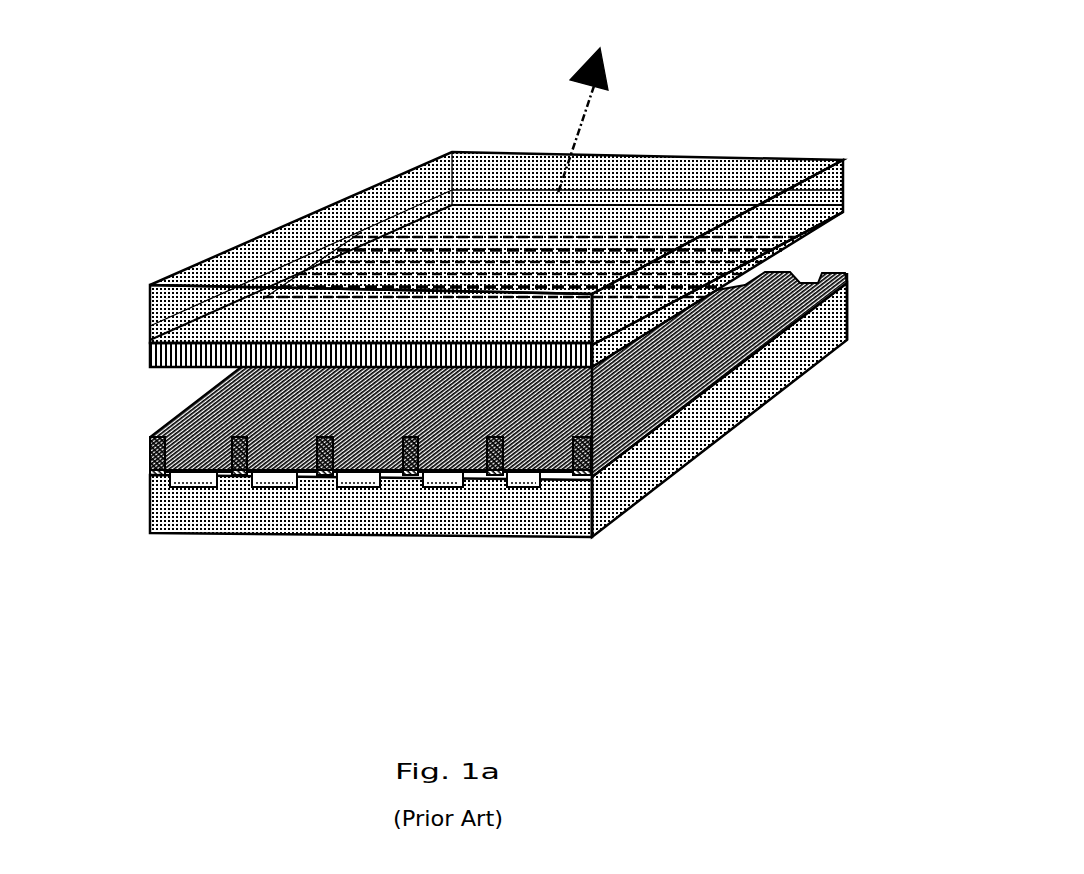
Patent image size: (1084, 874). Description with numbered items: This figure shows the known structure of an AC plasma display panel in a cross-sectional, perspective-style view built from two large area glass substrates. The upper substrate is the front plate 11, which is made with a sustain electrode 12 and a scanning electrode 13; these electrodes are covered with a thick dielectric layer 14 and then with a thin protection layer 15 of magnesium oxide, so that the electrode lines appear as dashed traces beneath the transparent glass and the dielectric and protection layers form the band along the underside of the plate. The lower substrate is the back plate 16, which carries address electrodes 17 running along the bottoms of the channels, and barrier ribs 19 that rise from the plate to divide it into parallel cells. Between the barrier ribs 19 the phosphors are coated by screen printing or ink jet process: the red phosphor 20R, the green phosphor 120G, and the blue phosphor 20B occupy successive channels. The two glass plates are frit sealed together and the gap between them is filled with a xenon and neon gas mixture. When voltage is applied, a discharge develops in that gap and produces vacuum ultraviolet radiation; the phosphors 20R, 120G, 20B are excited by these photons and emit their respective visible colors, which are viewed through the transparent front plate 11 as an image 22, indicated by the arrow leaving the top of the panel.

The front plate 11 is at (824, 188).
The sustain electrode 12 is at (795, 259).
The scanning electrode 13 is at (848, 338).
The thick dielectric layer 14 is at (504, 373).
The thin protection layer 15 is at (152, 370).
The back plate 16 is at (625, 499).
The address electrodes 17 is at (164, 480).
The barrier ribs 19 is at (625, 456).
The red phosphor 20R is at (211, 480).
The green phosphor layer 120G is at (301, 480).
The blue phosphor 20B is at (387, 480).
The image 22 is at (594, 107).